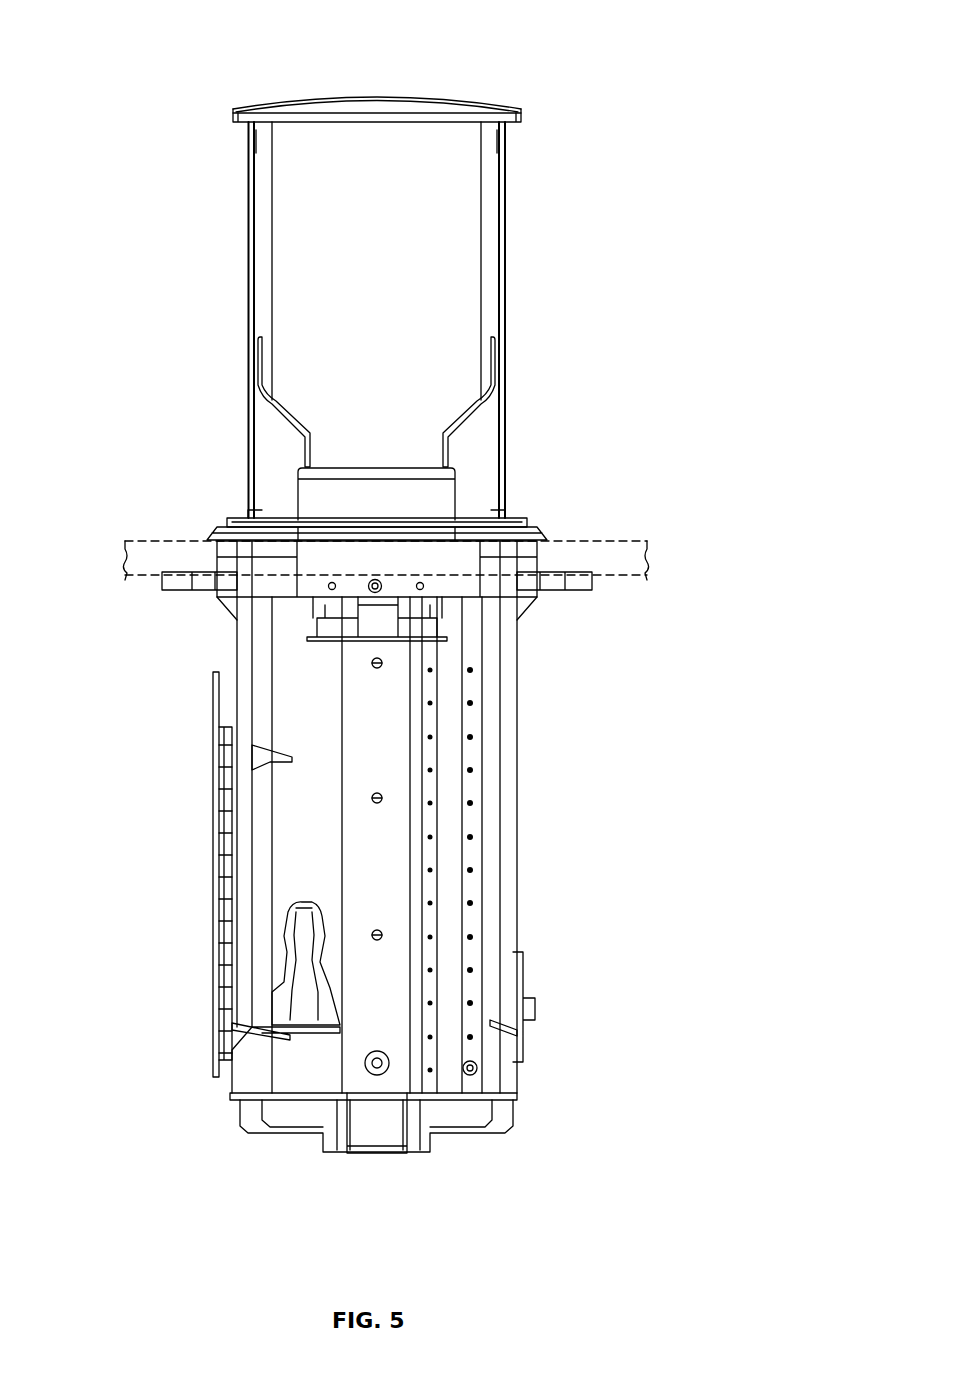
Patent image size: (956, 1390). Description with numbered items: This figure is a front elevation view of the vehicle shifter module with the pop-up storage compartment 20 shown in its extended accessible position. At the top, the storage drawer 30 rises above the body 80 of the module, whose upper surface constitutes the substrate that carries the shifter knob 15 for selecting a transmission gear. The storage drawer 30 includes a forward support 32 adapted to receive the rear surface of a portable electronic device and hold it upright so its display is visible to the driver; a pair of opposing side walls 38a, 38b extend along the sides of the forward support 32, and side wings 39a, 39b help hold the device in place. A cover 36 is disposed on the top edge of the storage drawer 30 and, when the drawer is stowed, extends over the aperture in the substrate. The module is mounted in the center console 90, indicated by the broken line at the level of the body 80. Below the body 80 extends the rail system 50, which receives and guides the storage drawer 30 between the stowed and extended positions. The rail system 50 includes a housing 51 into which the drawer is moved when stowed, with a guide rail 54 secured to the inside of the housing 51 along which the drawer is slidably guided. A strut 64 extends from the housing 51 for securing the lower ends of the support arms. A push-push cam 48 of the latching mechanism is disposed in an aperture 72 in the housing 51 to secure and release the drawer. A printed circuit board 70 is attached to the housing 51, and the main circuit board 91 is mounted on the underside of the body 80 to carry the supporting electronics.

The pop-up storage compartment 20 is at (233, 80).
The cover 36 is at (432, 97).
The forward support 32 is at (362, 183).
The storage drawer 30 is at (238, 150).
The side wall 38a is at (248, 175).
The side wall 38b is at (506, 166).
The side wing 39a is at (277, 443).
The side wing 39b is at (478, 447).
The shifter knob 15 is at (325, 493).
The center console 90 is at (141, 540).
The body 80 is at (526, 534).
The printed circuit board 70 is at (213, 689).
The main circuit board 91 is at (396, 646).
The housing 51 is at (493, 772).
The rail system 50 is at (520, 803).
The strut 64 is at (524, 980).
The aperture 72 is at (282, 950).
The push-push cam 48 is at (299, 995).
The guide rail 54 is at (372, 1132).